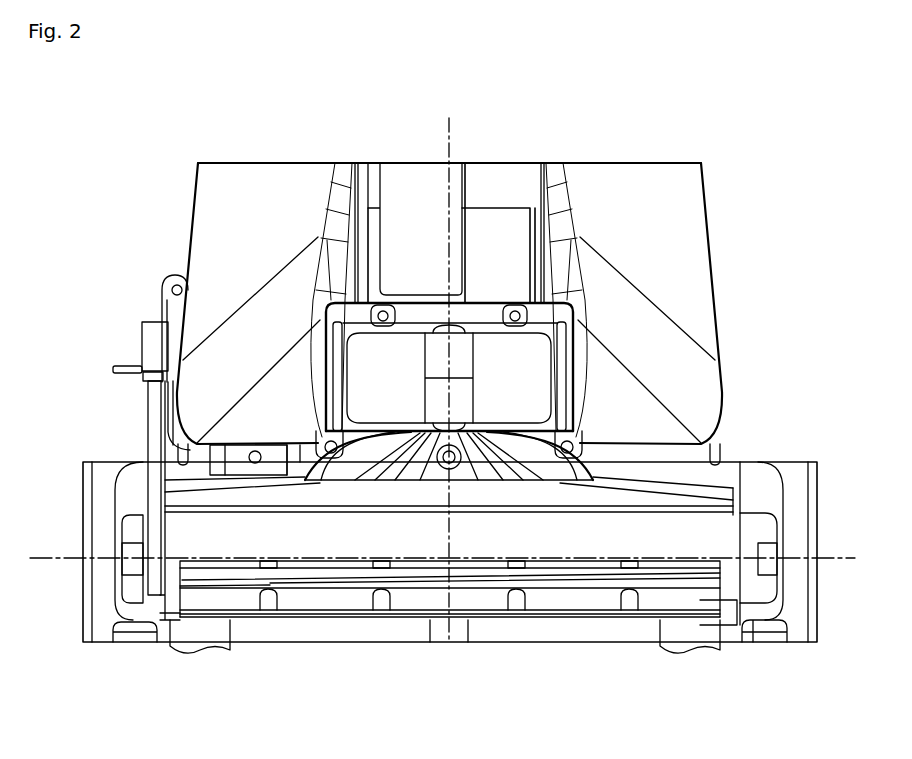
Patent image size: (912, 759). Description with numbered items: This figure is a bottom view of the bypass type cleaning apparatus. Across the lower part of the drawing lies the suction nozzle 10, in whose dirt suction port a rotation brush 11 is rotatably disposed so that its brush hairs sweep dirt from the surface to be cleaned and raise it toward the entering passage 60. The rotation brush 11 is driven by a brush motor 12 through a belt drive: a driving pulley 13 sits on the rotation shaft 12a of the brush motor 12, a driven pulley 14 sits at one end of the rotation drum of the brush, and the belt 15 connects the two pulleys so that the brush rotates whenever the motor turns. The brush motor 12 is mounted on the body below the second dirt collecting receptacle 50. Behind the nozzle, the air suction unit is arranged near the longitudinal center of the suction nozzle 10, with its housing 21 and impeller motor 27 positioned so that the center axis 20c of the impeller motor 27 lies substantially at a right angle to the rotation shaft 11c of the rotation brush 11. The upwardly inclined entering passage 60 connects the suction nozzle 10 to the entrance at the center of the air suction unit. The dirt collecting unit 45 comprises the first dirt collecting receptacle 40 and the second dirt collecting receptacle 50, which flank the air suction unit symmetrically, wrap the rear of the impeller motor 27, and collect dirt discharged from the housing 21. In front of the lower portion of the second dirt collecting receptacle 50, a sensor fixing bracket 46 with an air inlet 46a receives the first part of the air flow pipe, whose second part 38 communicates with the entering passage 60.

The suction nozzle 10 is at (307, 652).
The rotation brush 11 is at (263, 582).
The rotation shaft of the rotation brush 11c is at (835, 558).
The brush motor 12 is at (178, 322).
The rotation shaft of the brush motor 12a is at (133, 366).
The driving pulley 13 is at (150, 378).
The driven pulley 14 is at (127, 580).
The belt 15 is at (150, 420).
The center axis of the impeller motor 20c is at (447, 126).
The housing 21 is at (538, 370).
The impeller motor 27 is at (505, 213).
The second part of the air flow pipe 38 is at (447, 471).
The first dirt collecting receptacle 40 is at (628, 176).
The dirt collecting unit 45 is at (728, 168).
The sensor fixing bracket 46 is at (262, 476).
The air inlet of the sensor fixing bracket 46a is at (252, 463).
The second dirt collecting receptacle 50 is at (255, 182).
The entering passage 60 is at (302, 457).